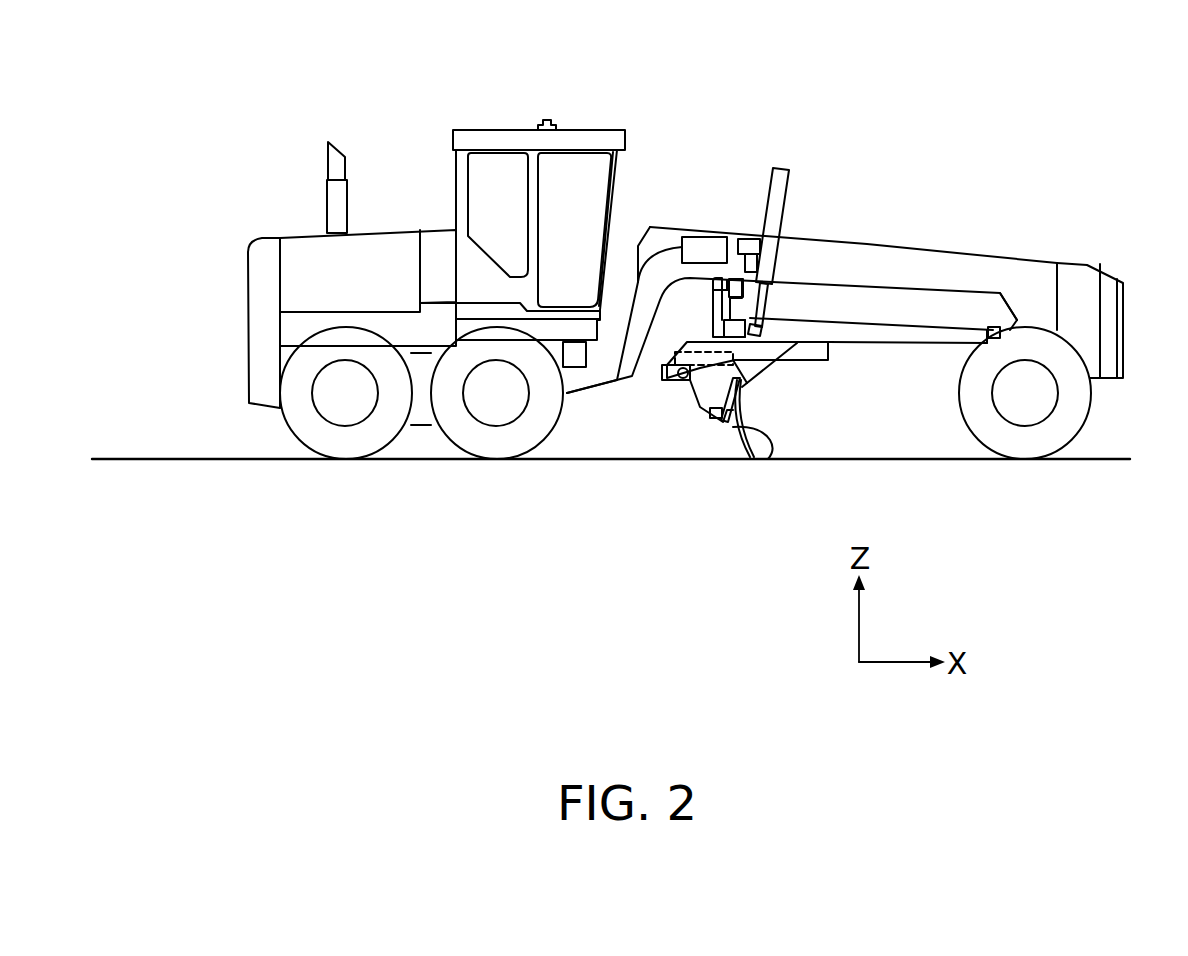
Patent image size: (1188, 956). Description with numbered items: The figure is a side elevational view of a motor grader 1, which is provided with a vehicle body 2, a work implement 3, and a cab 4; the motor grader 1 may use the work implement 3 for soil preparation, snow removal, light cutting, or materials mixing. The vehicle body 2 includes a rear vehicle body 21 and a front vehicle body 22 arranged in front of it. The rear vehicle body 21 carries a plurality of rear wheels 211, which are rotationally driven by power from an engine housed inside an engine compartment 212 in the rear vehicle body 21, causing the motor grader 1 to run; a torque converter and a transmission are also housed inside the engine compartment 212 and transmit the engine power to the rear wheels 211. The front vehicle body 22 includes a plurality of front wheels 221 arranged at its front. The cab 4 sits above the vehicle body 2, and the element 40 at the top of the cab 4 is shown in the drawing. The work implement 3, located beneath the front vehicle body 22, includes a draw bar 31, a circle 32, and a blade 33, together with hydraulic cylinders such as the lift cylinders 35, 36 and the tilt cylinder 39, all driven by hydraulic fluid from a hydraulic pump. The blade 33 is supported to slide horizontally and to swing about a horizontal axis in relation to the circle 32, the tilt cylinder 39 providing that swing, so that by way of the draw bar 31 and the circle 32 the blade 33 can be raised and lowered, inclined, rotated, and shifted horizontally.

The motor grader 1 is at (893, 106).
The vehicle body 2 is at (670, 193).
The work implement 3 is at (806, 442).
The cab 4 is at (520, 116).
The rear vehicle body 21 is at (389, 202).
The front vehicle body 22 is at (912, 227).
The draw bar 31 is at (927, 338).
The circle 32 is at (818, 353).
The blade 33 is at (748, 427).
The lift cylinder 35 is at (773, 181).
The lift cylinder 36 is at (768, 252).
The tilt cylinder 39 is at (700, 395).
The cab 40 is at (585, 127).
The rear wheels 211 is at (348, 447).
The engine compartment 212 is at (307, 250).
The front wheels 221 is at (1032, 447).